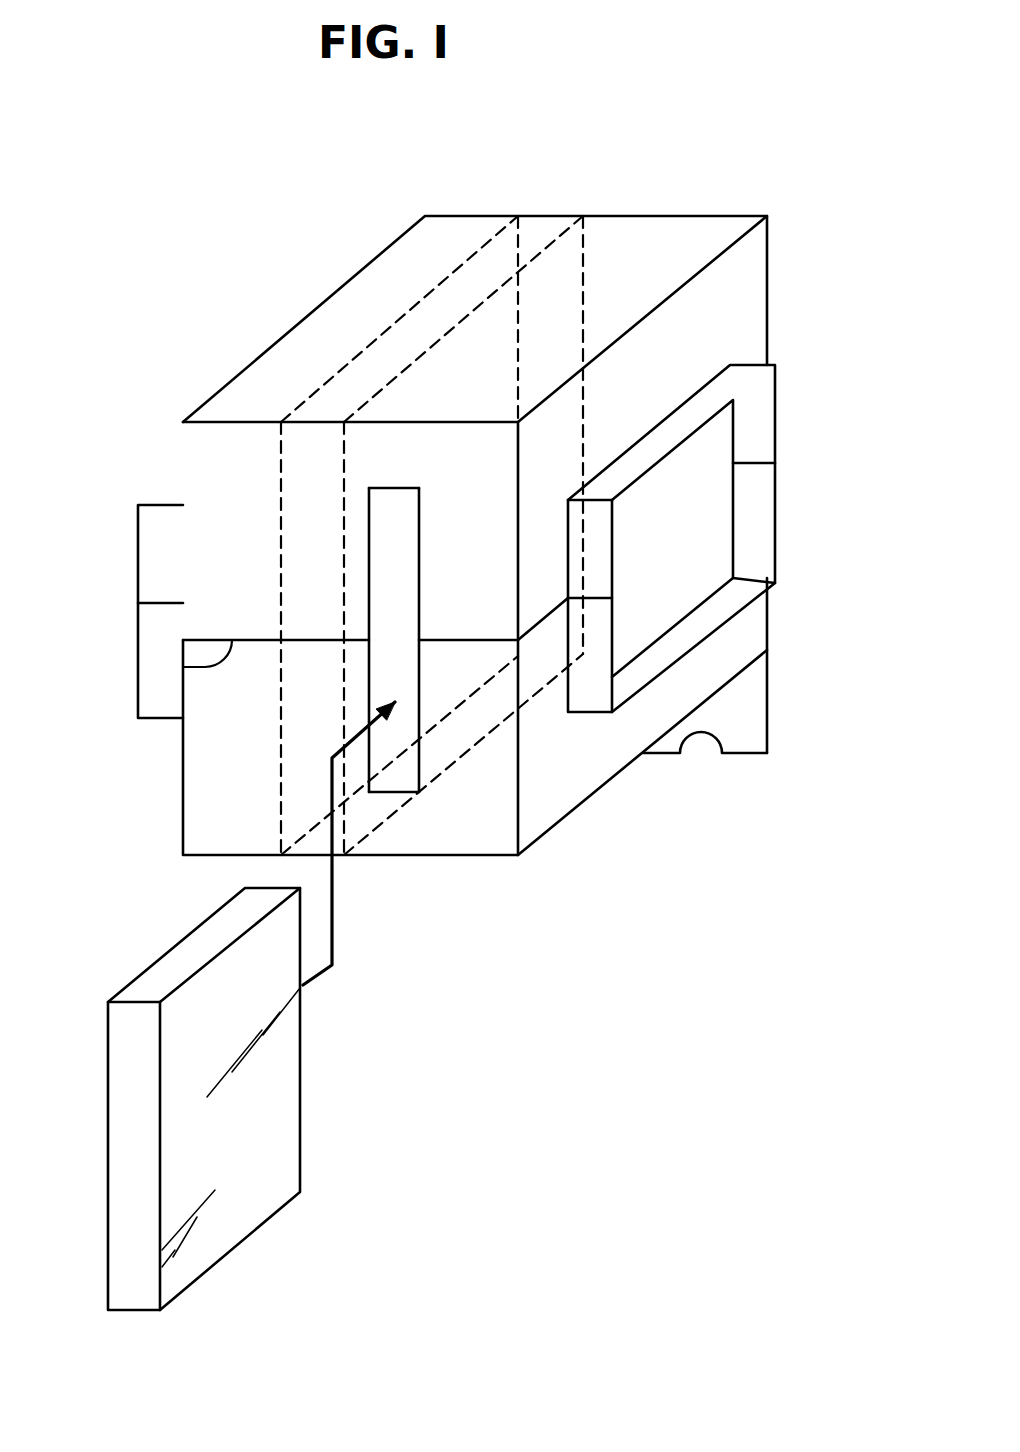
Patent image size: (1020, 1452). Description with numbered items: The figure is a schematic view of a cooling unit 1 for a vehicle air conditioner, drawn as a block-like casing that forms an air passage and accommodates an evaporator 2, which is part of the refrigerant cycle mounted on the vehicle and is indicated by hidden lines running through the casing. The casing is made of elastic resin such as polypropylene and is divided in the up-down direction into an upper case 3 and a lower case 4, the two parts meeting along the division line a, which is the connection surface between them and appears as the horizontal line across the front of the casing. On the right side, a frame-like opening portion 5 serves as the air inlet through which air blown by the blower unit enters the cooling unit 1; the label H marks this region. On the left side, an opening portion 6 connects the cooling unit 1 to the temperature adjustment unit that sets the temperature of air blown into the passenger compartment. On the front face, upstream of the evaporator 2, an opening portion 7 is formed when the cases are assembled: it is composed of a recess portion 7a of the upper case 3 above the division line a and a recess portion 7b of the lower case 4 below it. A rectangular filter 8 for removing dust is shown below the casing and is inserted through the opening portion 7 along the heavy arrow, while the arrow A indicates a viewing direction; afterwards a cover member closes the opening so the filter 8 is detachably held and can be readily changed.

The cooling unit 1 is at (695, 211).
The evaporator 2 is at (475, 283).
The upper case 3 is at (767, 263).
The lower case 4 is at (484, 860).
The opening portion 5 is at (705, 498).
The opening portion 6 is at (138, 556).
The opening portion 7 is at (405, 777).
The recess portion 7a is at (418, 525).
The recess portion 7b is at (412, 704).
The filter 8 is at (268, 1128).
The division line a is at (183, 667).
The direction A is at (475, 573).
The opening H is at (823, 563).